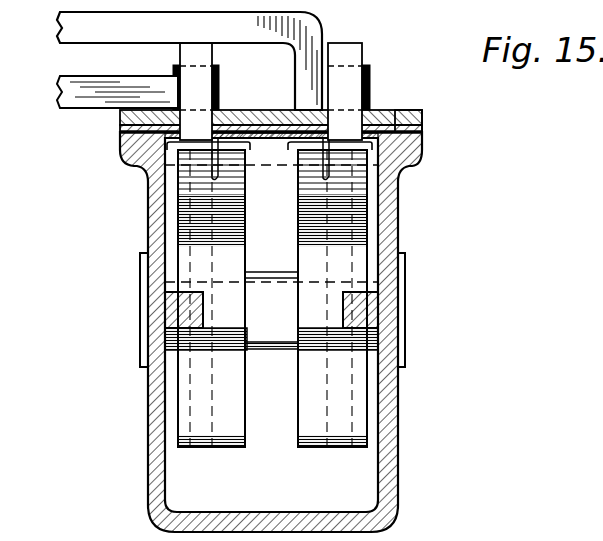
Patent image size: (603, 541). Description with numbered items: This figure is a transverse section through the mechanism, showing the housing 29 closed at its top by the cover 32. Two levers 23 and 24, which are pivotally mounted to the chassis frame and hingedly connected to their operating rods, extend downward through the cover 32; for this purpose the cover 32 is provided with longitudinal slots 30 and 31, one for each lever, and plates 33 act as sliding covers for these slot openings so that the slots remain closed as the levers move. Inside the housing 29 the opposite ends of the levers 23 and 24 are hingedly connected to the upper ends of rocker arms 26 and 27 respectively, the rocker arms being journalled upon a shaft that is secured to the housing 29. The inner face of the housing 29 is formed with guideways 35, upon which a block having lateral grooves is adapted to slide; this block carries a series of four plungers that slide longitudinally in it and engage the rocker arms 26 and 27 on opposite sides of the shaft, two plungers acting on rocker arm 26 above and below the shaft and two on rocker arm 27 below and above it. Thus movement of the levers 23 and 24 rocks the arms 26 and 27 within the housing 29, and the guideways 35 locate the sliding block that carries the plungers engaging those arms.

The lever 23 is at (189, 61).
The lever 24 is at (72, 94).
The rocker arm 26 is at (349, 91).
The rocker arm 27 is at (196, 91).
The housing 29 is at (400, 228).
The longitudinal slot 30 is at (422, 124).
The longitudinal slot 31 is at (120, 126).
The cover 32 is at (245, 118).
The plates 33 is at (318, 142).
The guideways 35 is at (335, 313).